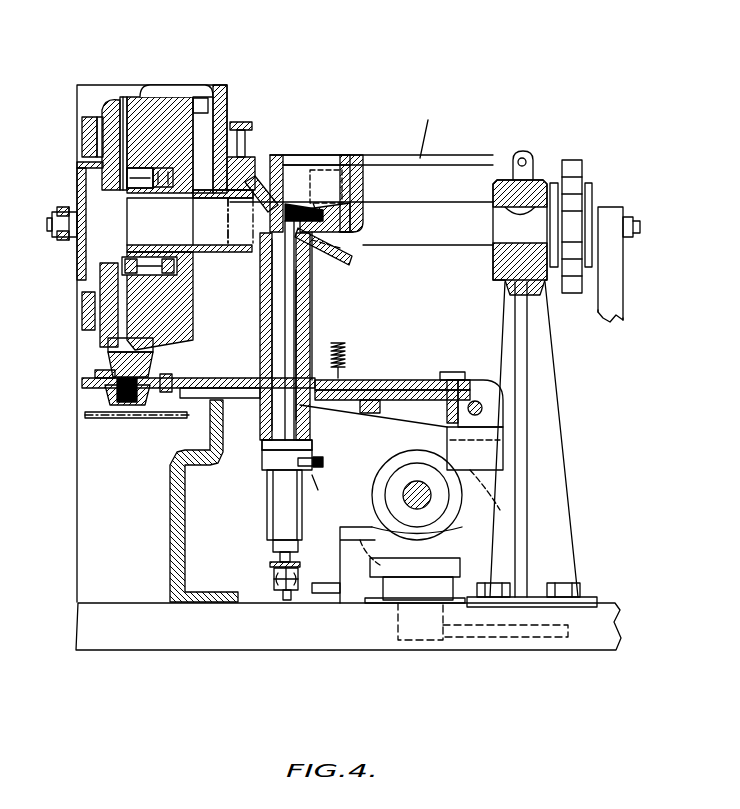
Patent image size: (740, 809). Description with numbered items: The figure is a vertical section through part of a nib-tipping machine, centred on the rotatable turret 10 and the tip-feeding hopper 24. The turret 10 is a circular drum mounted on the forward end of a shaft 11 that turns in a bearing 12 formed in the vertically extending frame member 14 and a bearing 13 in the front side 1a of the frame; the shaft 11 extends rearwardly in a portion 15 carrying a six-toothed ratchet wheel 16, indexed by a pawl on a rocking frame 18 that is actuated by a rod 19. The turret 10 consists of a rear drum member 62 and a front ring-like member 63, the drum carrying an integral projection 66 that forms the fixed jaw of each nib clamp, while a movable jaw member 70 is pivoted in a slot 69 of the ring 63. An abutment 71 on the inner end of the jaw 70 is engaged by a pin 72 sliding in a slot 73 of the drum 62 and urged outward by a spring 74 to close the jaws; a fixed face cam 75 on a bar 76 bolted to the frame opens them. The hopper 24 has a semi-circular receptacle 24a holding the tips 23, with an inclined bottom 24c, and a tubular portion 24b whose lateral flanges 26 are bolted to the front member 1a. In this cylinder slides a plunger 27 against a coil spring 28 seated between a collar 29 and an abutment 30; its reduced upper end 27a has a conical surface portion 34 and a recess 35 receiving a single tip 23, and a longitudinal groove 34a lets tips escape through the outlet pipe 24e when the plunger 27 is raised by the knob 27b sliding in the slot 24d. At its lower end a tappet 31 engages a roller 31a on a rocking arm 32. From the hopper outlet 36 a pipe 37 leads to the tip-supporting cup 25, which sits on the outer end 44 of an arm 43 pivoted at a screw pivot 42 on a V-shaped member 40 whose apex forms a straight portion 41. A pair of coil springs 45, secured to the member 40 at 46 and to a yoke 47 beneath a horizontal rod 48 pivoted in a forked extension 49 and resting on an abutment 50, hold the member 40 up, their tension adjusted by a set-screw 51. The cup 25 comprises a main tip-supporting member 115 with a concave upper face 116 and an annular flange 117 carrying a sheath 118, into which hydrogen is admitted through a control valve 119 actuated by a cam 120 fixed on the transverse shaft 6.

The front side 1a is at (200, 398).
The transversely arranged shaft 6 is at (430, 492).
The rotatable turret 10 is at (160, 100).
The shaft 11 is at (440, 202).
The bearing 12 is at (525, 180).
The bearing 13 is at (218, 198).
The vertically extending frame member 14 is at (553, 397).
The rearward portion of shaft 15 is at (606, 207).
The ratchet wheel 16 is at (572, 160).
The rocking frame 18 is at (556, 183).
The rod 19 is at (605, 322).
The tips 23 is at (330, 203).
The hopper 24 is at (276, 155).
The receptacle 24a is at (362, 175).
The tubular portion 24b is at (318, 318).
The bottom of receptacle 24c is at (348, 222).
The slot 24d is at (320, 482).
The outlet pipe 24e is at (352, 262).
The tip-supporting cup 25 is at (112, 358).
The lateral flanges 26 is at (262, 455).
The plunger 27 is at (268, 445).
The upper end portion of plunger 27a is at (312, 258).
The hand lever or knob 27b is at (323, 462).
The coil spring 28 is at (310, 325).
The collar 29 is at (312, 446).
The abutment 30 is at (310, 302).
The tappet 31 is at (300, 564).
The roller 31a is at (290, 600).
The rocking arm 32 is at (272, 576).
The conical surface portion 34 is at (330, 205).
The longitudinal groove 34a is at (340, 280).
The groove or recess 35 is at (300, 203).
The outlet of hopper 36 is at (286, 200).
The pipe 37 is at (226, 232).
The V-shaped member 40 is at (440, 430).
The straight portion 41 is at (243, 398).
The screw pivot 42 is at (450, 372).
The arm 43 is at (400, 380).
The outer end of arm 44 is at (100, 390).
The coil springs 45 is at (358, 357).
The spring attachment point 46 is at (365, 413).
The yoke 47 is at (350, 185).
The horizontal rod 48 is at (427, 128).
The forked extension 49 is at (520, 160).
The abutment 50 is at (240, 165).
The set-screw 51 is at (240, 122).
The rear circular drum member 62 is at (198, 112).
The front ring-like member 63 is at (82, 138).
The projection 66 is at (124, 98).
The slot 69 is at (97, 120).
The movable jaw member 70 is at (112, 100).
The abutment 71 is at (128, 186).
The pin 72 is at (77, 163).
The slot 73 is at (170, 188).
The spring 74 is at (128, 258).
The fixed face cam 75 is at (77, 183).
The bar 76 is at (70, 242).
The main tip-supporting member 115 is at (90, 418).
The concave upper face 116 is at (110, 350).
The external annular flange 117 is at (122, 404).
The cover or sheath 118 is at (145, 406).
The control valve 119 is at (400, 578).
The cam 120 is at (400, 500).